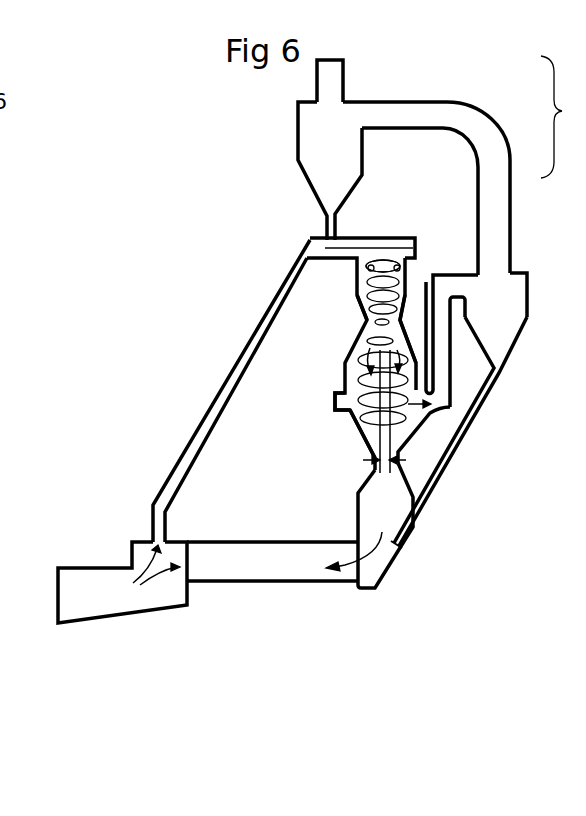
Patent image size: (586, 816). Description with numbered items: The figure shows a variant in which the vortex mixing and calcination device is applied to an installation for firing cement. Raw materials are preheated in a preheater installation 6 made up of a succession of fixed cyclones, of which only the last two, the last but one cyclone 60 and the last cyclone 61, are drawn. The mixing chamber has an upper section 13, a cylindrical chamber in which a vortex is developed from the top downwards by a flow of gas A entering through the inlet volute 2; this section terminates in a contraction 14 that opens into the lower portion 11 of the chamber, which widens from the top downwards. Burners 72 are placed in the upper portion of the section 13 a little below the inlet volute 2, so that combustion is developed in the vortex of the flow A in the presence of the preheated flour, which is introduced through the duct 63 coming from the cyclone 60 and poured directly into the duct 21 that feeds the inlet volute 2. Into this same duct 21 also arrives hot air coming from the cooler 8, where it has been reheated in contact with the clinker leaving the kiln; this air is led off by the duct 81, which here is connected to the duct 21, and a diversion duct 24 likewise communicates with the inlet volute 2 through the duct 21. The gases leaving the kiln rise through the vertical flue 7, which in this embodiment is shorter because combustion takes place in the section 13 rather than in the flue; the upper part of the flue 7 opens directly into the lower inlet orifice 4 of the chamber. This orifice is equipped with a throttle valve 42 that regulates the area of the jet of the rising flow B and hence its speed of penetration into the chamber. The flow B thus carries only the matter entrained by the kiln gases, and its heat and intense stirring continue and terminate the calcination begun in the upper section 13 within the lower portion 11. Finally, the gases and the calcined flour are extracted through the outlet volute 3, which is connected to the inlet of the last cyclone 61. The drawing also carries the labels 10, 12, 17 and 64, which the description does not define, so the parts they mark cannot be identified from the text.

The inlet volute 2 is at (422, 245).
The outlet volute 3 is at (335, 399).
The inlet orifice 4 is at (405, 453).
The preheater installation 6 is at (418, 165).
The vertical flue 7 is at (357, 512).
The cooler 8 is at (80, 575).
The valve disc 10 is at (373, 245).
The lower portion of the chamber 11 is at (332, 353).
The valve seat 12 is at (352, 421).
The upper section of the mixing chamber 13 is at (345, 298).
The contraction 14 is at (368, 327).
The chamber 17 is at (402, 153).
The duct 21 is at (323, 238).
The diversion duct 24 is at (400, 266).
The throttle valve 42 is at (355, 472).
The last but one cyclone 60 is at (350, 130).
The last cyclone 61 is at (518, 290).
The duct 63 is at (325, 222).
The bend 64 is at (488, 147).
The burners 72 is at (370, 275).
The duct 81 is at (249, 342).
The flow of gas A is at (380, 250).
The second flow of gas B is at (385, 438).